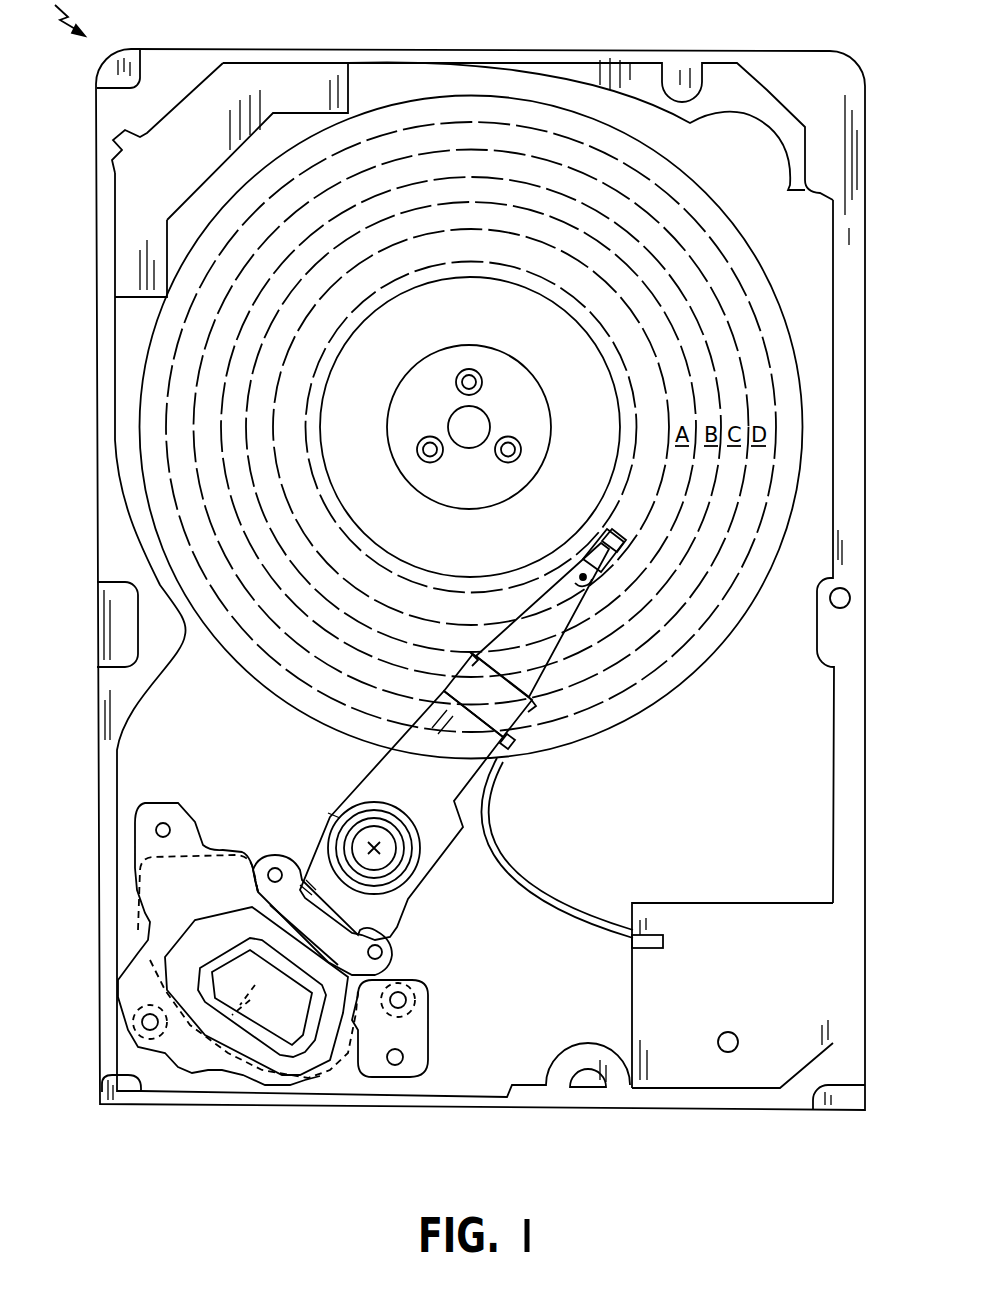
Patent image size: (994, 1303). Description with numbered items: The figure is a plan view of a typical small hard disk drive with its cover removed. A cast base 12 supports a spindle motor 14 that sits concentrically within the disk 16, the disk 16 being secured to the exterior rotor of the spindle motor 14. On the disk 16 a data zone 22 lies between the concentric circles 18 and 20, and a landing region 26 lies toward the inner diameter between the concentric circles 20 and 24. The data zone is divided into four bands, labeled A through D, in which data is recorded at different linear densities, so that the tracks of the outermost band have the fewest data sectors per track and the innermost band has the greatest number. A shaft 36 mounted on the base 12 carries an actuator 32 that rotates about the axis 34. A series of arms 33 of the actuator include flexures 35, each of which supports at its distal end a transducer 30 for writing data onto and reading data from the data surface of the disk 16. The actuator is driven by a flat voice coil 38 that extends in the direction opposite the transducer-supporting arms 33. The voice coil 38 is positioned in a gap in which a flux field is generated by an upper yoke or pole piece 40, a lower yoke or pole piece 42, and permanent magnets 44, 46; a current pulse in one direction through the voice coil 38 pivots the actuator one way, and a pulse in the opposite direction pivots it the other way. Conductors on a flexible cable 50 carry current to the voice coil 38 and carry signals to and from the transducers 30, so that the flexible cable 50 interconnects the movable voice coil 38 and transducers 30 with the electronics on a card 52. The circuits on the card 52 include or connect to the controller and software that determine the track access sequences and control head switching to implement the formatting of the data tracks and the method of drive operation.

The cast base 12 is at (97, 185).
The spindle motor 14 is at (448, 372).
The disk 16 is at (490, 99).
The concentric circle 18 is at (669, 196).
The concentric circle 20 is at (533, 235).
The data zone 22 is at (685, 232).
The concentric circle 24 is at (563, 285).
The landing region 26 is at (612, 313).
The transducer 30 is at (586, 546).
The actuator 32 is at (503, 752).
The arms 33 is at (510, 742).
The axis 34 is at (400, 870).
The flexures 35 is at (538, 606).
The shaft 36 is at (378, 838).
The flat voice coil 38 is at (306, 1062).
The upper yoke or pole piece 40 is at (392, 978).
The lower yoke or pole piece 42 is at (420, 1049).
The permanent magnet 44 is at (136, 914).
The permanent magnet 46 is at (243, 1047).
The flexible cable 50 is at (498, 886).
The card 52 is at (754, 996).